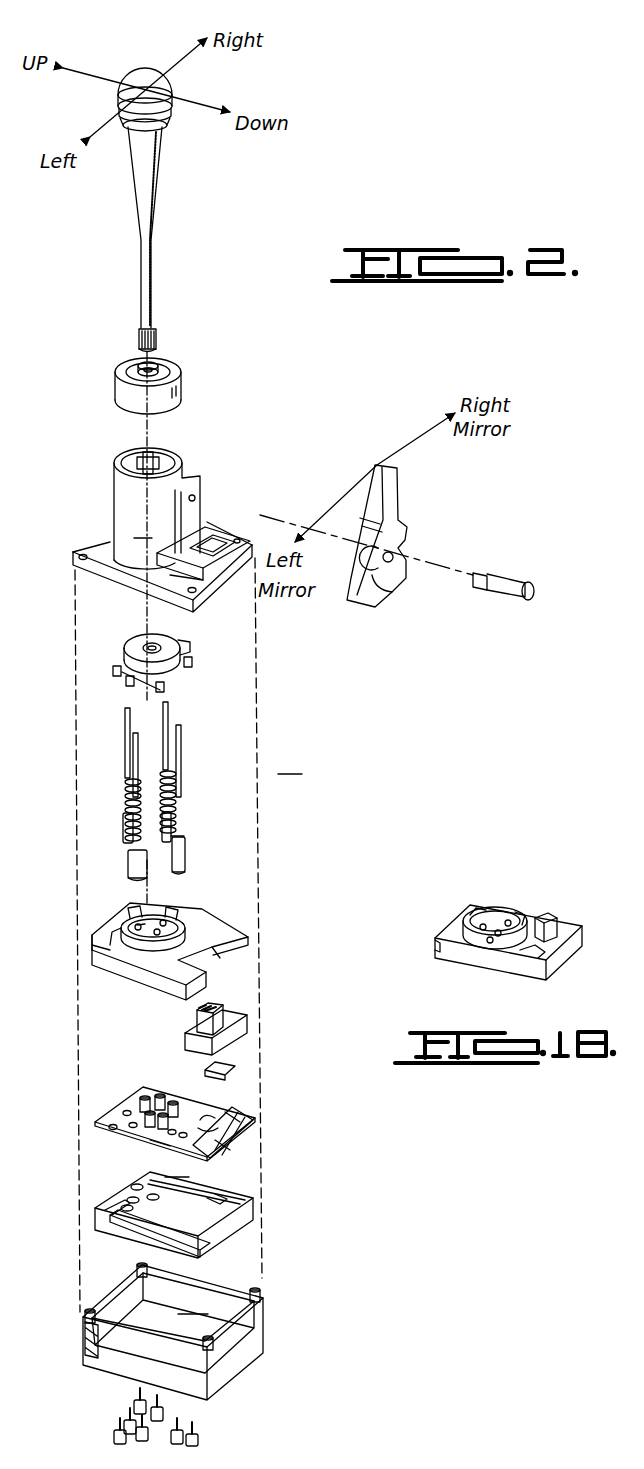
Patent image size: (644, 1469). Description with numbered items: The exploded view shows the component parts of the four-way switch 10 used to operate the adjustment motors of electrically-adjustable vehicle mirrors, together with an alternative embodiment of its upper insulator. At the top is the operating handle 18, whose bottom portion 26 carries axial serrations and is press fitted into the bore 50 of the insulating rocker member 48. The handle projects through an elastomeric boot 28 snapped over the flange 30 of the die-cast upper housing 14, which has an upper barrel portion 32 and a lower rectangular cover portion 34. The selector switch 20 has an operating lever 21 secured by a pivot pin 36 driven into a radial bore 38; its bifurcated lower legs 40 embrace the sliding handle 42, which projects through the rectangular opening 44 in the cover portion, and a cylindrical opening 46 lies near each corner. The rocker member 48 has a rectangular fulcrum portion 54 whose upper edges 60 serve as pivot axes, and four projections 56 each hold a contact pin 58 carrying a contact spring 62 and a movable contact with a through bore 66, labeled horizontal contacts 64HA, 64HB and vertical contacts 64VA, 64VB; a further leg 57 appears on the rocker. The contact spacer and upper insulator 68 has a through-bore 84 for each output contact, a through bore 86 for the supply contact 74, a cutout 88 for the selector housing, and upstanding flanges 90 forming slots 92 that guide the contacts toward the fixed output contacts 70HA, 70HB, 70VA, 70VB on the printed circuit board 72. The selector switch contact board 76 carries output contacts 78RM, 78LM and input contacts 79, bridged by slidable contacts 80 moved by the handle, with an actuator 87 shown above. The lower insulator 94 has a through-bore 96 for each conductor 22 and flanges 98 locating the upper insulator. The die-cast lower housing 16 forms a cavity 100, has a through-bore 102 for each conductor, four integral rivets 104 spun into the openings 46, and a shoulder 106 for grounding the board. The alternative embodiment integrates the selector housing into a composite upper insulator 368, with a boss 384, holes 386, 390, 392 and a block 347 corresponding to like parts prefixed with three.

In FIG. 2, the switch 10 is at (290, 762).
In FIG. 2, the upper housing 14 is at (157, 489).
In FIG. 2, the lower housing 16 is at (179, 1331).
In FIG. 2, the operating handle 18 is at (157, 197).
In FIG. 2, the selector switch 20 is at (283, 1010).
In FIG. 2, the operating lever 21 is at (407, 554).
In FIG. 2, the conductors 22 is at (210, 1420).
In FIG. 2, the bottom portion 26 is at (158, 338).
In FIG. 2, the boot 28 is at (178, 387).
In FIG. 2, the flange 30 is at (175, 448).
In FIG. 2, the upper barrel portion 32 is at (143, 527).
In FIG. 2, the lower rectangular cover portion 34 is at (100, 540).
In FIG. 2, the pivot pin 36 is at (500, 580).
In FIG. 2, the radial bore 38 is at (200, 497).
In FIG. 2, the lower legs 40 is at (383, 580).
In FIG. 2, the sliding handle 42 is at (259, 1013).
In FIG. 2, the rectangular opening 44 is at (203, 543).
In FIG. 2, the cylindrical opening 46 is at (202, 583).
In FIG. 2, the rocker member 48 is at (133, 645).
In FIG. 2, the bore 50 is at (163, 647).
In FIG. 2, the fulcrum portion 54 is at (130, 680).
In FIG. 2, the projections 56 is at (130, 680).
In FIG. 2, the cam leg 57 is at (177, 677).
In FIG. 2, the contact pin 58 is at (125, 720).
In FIG. 2, the upper edges 60 is at (117, 662).
In FIG. 2, the contact spring 62 is at (182, 797).
In FIG. 2, the horizontal A contact 64HA is at (128, 860).
In FIG. 2, the horizontal B contact 64HB is at (185, 817).
In FIG. 2, the vertical A contact 64VA is at (125, 827).
In FIG. 2, the vertical B contact 64VB is at (185, 852).
In FIG. 2, the through bore 66 is at (185, 837).
In FIG. 2, the contact spacer and upper insulator 68 is at (171, 941).
In FIG. 2, the horizontal A output contact 70HA is at (160, 1143).
In FIG. 2, the horizontal B output contact 70HB is at (168, 1096).
In FIG. 2, the vertical A output contact 70VA is at (130, 1098).
In FIG. 2, the vertical B output contact 70VB is at (185, 1115).
In FIG. 2, the printed circuit board 72 is at (174, 1104).
In FIG. 2, the fixed supply contact 74 is at (160, 1150).
In FIG. 2, the selector switch contact board 76 is at (177, 1165).
In FIG. 2, the left mirror output contacts 78LM is at (233, 1110).
In FIG. 2, the right mirror output contacts 78RM is at (223, 1150).
In FIG. 2, the input contacts 79 is at (265, 1145).
In FIG. 2, the slidable contacts 80 is at (233, 1070).
In FIG. 2, the through-bore 84 is at (175, 913).
In FIG. 2, the through bore 86 is at (160, 942).
In FIG. 2, the switch actuator 87 is at (267, 1025).
In FIG. 2, the cutout 88 is at (217, 960).
In FIG. 2, the upstanding flanges 90 is at (122, 930).
In FIG. 2, the slots 92 is at (112, 950).
In FIG. 2, the lower insulator 94 is at (170, 1215).
In FIG. 2, the through-bore 96 is at (108, 1215).
In FIG. 2, the flanges 98 is at (120, 1188).
In FIG. 2, the cavity 100 is at (193, 1302).
In FIG. 2, the through-bore 102 is at (130, 1318).
In FIG. 2, the rivets 104 is at (257, 1298).
In FIG. 2, the shoulder 106 is at (88, 1352).
In FIG. 18, the switch block 347 is at (553, 928).
In FIG. 18, the composite upper insulator 368 is at (452, 913).
In FIG. 18, the guide boss 384 is at (510, 923).
In FIG. 18, the guide hole 386 is at (477, 940).
In FIG. 18, the guide hole 390 is at (480, 950).
In FIG. 18, the guide hole 392 is at (483, 940).